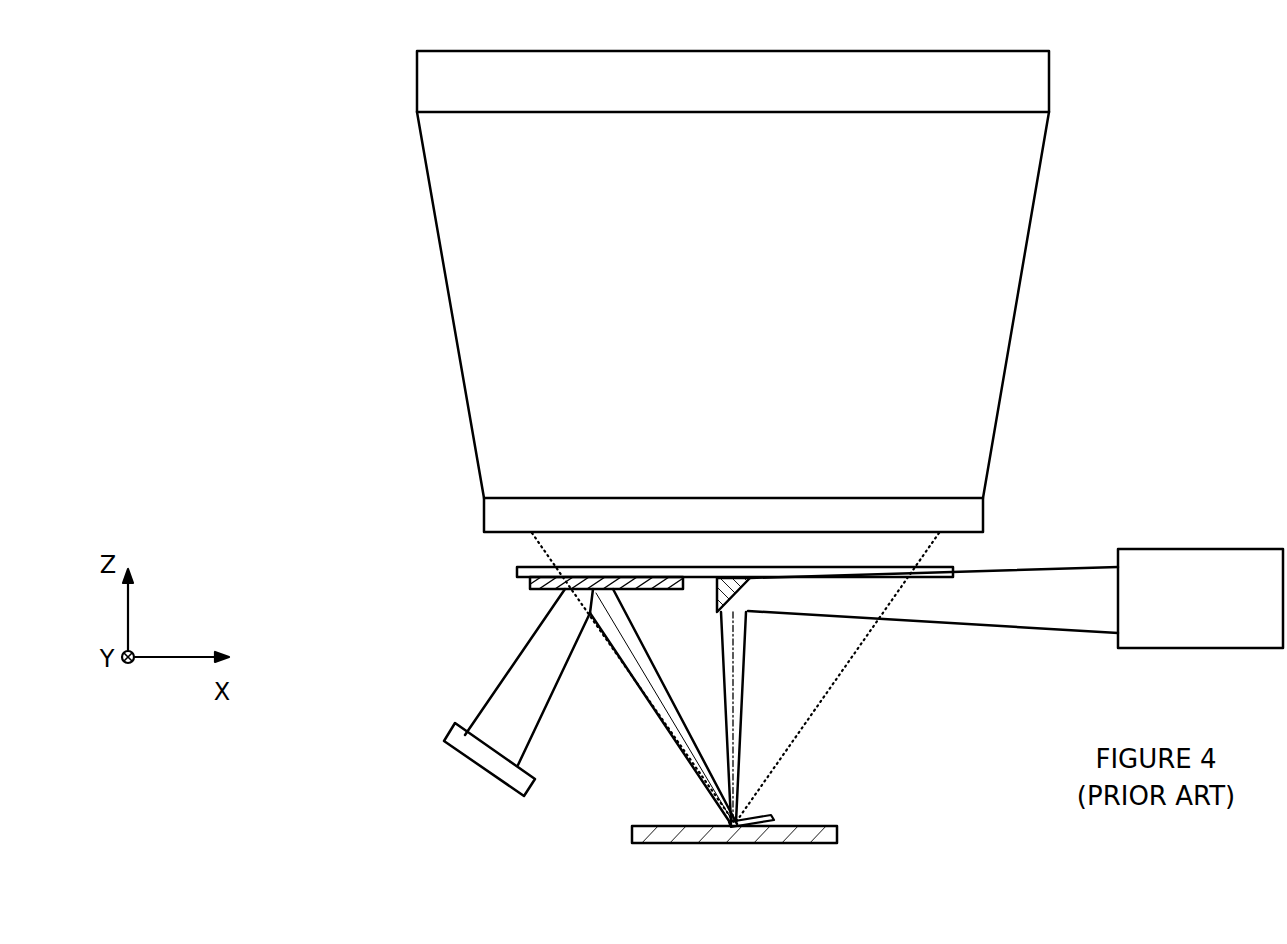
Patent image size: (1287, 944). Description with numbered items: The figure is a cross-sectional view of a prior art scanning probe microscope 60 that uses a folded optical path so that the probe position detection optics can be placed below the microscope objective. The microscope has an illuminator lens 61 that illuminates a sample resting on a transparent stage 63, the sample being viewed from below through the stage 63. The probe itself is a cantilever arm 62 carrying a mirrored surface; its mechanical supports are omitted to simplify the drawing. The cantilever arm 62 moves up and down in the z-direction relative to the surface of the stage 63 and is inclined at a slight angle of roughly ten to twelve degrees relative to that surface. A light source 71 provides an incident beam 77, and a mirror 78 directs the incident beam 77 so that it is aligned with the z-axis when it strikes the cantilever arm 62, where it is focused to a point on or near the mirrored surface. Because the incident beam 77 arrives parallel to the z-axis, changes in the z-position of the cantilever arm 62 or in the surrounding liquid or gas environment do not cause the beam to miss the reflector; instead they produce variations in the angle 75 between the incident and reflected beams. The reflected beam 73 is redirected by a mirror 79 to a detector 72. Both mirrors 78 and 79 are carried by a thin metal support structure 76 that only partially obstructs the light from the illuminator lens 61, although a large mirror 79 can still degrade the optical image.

The scanning probe microscope 60 is at (208, 115).
The illuminator lens 61 is at (968, 445).
The cantilever arm 62 is at (764, 817).
The stage 63 is at (823, 837).
The light source 71 is at (1203, 555).
The detector 72 is at (464, 760).
The reflected beam 73 is at (652, 695).
The angle between incident and reflected beams 75 is at (732, 715).
The thin metal support structure 76 is at (946, 563).
The incident beam 77 is at (1002, 618).
The mirror 78 is at (722, 589).
The mirror 79 is at (554, 590).